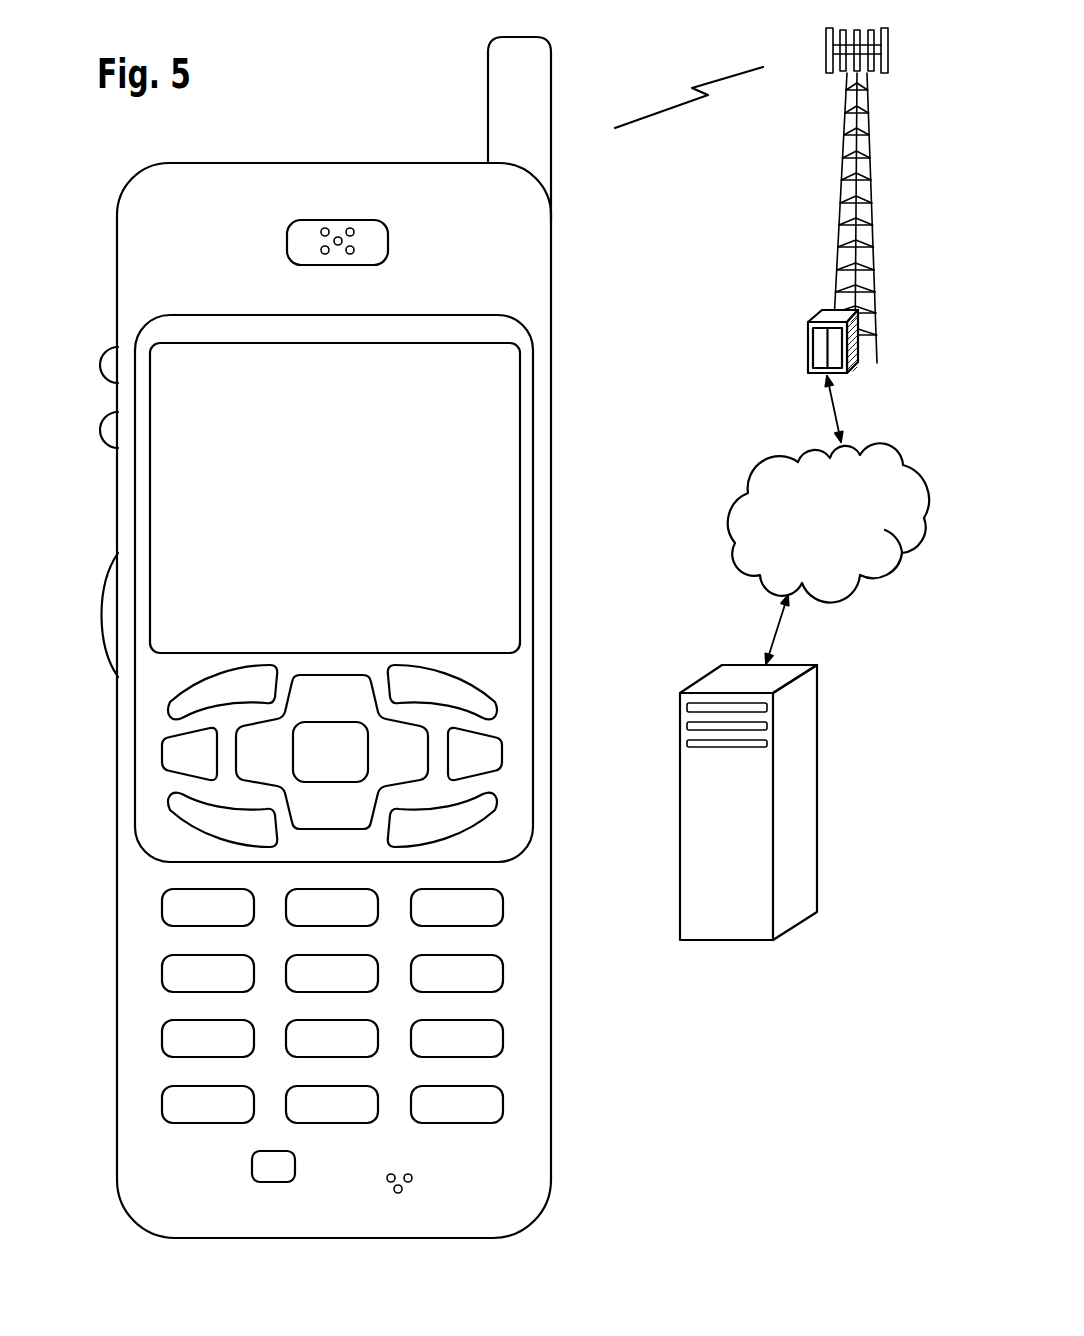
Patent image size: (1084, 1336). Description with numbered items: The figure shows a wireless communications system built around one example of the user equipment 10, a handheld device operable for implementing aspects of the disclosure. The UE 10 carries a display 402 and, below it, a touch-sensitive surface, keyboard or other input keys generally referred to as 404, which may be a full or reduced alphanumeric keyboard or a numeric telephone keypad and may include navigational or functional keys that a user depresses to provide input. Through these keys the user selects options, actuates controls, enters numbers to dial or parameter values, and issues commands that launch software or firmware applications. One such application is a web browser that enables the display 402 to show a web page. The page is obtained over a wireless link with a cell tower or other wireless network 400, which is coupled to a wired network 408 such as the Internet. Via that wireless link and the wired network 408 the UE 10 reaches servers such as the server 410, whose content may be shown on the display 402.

The user equipment 10 is at (170, 1237).
The wireless communication network 400 is at (843, 213).
The display 402 is at (522, 358).
The input keys 404 is at (562, 665).
The wired network 408 is at (746, 570).
The server 410 is at (724, 940).